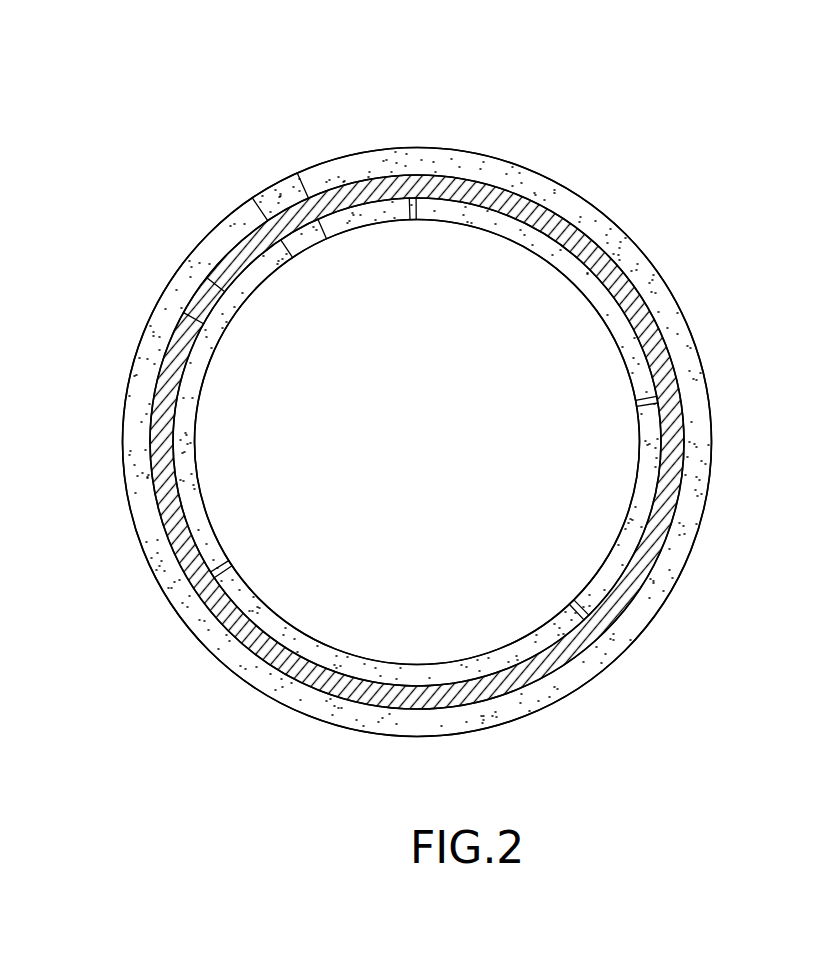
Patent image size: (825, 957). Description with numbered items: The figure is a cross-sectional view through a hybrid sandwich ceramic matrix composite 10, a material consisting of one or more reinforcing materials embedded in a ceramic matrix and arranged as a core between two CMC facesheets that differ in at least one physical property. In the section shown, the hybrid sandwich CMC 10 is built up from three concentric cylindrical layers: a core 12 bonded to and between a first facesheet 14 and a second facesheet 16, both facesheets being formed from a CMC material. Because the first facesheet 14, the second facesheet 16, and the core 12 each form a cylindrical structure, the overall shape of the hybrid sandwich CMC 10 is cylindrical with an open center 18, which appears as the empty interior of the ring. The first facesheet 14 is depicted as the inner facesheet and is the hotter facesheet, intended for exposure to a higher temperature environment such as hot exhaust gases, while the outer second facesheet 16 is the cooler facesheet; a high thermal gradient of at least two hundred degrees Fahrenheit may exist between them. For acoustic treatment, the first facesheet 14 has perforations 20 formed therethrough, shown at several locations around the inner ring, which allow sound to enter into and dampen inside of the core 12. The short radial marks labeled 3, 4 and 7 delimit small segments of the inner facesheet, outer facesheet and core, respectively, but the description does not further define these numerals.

The hybrid sandwich ceramic matrix composite 10 is at (609, 107).
The core 12 is at (160, 397).
The first facesheet 14 is at (585, 278).
The second facesheet 16 is at (668, 313).
The open center 18 is at (420, 450).
The perforations 20 is at (413, 221).
The inner layer section 3 is at (306, 248).
The outer layer section 4 is at (278, 188).
The middle layer section 7 is at (195, 293).